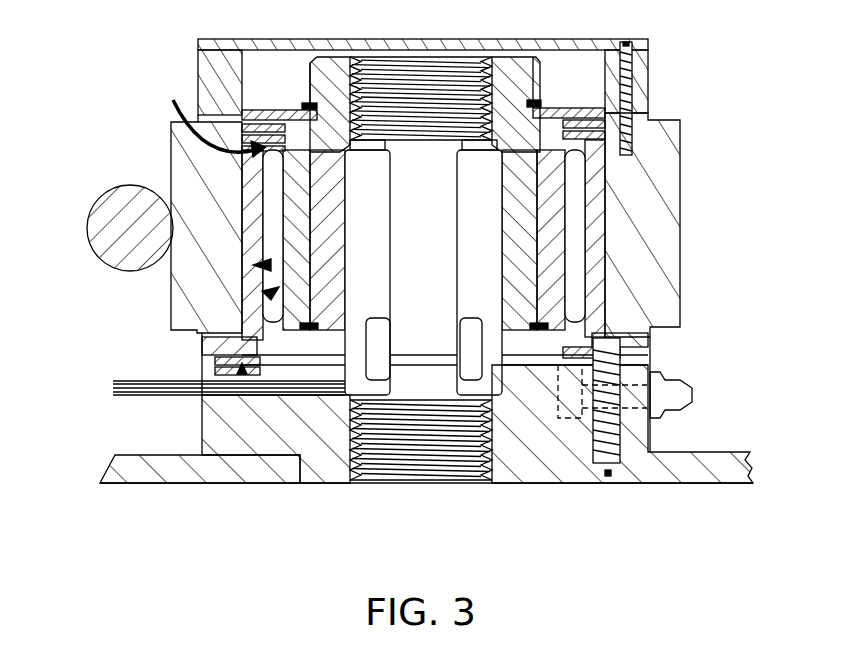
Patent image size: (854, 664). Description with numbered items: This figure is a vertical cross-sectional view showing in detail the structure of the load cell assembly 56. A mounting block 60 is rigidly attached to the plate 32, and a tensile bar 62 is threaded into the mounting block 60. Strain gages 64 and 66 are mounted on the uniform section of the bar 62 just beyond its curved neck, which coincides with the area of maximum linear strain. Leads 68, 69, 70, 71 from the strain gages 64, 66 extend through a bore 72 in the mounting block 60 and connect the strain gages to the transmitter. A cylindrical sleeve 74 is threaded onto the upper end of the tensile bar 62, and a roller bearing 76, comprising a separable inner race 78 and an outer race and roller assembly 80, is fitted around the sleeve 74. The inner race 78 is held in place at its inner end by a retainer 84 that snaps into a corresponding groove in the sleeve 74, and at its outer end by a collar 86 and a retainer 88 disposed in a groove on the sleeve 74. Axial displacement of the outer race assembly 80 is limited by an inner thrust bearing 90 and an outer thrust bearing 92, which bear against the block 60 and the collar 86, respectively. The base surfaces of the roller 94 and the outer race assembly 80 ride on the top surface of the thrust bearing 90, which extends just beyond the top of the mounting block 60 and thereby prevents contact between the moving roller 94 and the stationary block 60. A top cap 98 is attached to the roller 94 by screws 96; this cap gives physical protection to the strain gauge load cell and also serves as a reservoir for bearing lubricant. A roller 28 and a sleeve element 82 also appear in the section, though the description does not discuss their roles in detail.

The roller 28 is at (108, 228).
The plate 32 is at (695, 470).
The load cell assembly 56 is at (730, 112).
The mounting block 60 is at (330, 458).
The bar 62 is at (438, 254).
The strain gage 64 is at (380, 348).
The strain gage 66 is at (473, 348).
The lead 68 is at (130, 382).
The lead 69 is at (270, 294).
The lead 70 is at (140, 393).
The lead 71 is at (150, 397).
The bore 72 is at (202, 404).
The cylindrical sleeve 74 is at (340, 83).
The roller bearing 76 is at (200, 335).
The inner race 78 is at (300, 255).
The outer race and roller assembly 80 is at (277, 266).
The cylinder sleeve 82 is at (300, 192).
The retainer 84 is at (318, 326).
The collar 86 is at (262, 112).
The retainer 88 is at (312, 105).
The inner thrust bearing 90 is at (242, 370).
The outer thrust bearing 92 is at (200, 125).
The roller 94 is at (177, 162).
The screw 96 is at (628, 100).
The top cap 98 is at (565, 45).